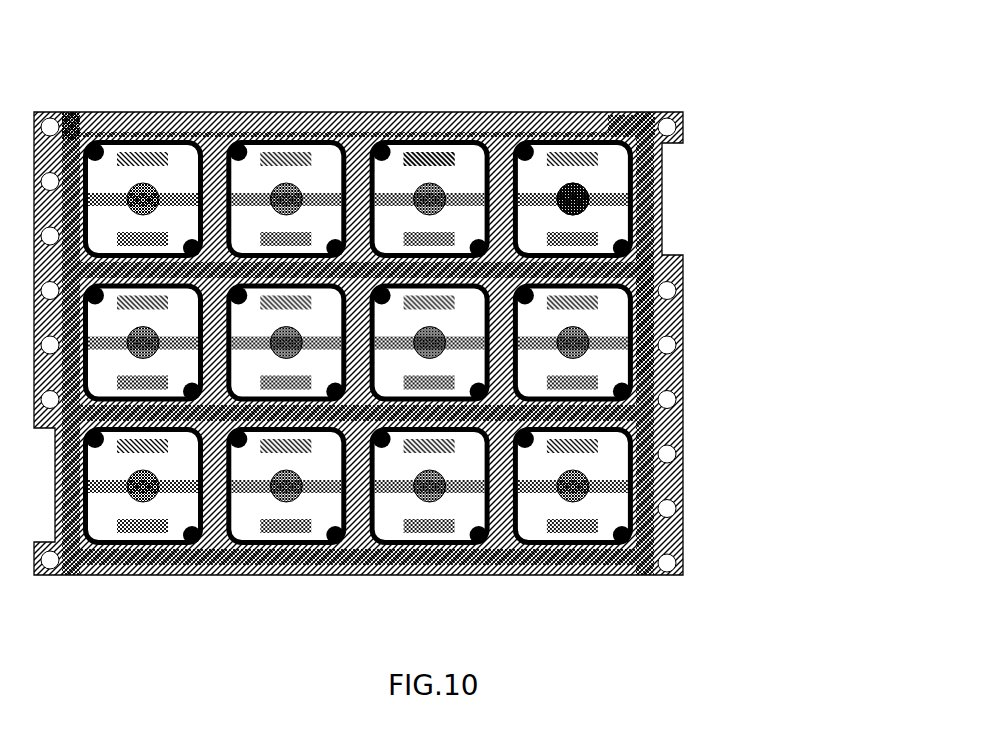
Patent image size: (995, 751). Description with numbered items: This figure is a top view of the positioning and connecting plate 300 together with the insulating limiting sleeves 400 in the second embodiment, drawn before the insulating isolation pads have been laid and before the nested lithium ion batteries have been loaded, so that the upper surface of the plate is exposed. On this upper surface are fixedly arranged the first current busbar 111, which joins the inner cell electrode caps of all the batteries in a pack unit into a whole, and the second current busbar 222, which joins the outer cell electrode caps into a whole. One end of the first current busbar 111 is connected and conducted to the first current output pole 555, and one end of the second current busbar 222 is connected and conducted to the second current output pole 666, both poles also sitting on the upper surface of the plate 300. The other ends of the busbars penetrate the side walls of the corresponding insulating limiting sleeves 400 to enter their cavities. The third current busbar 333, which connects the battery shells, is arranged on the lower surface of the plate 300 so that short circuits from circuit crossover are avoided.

The positioning and connecting plate 300 is at (298, 112).
The first current busbar 111 is at (590, 197).
The third current busbar 333 is at (450, 160).
The second current busbar 222 is at (332, 562).
The insulating limiting sleeve 400 is at (660, 315).
The first current output pole 555 is at (92, 120).
The second current output pole 666 is at (623, 127).